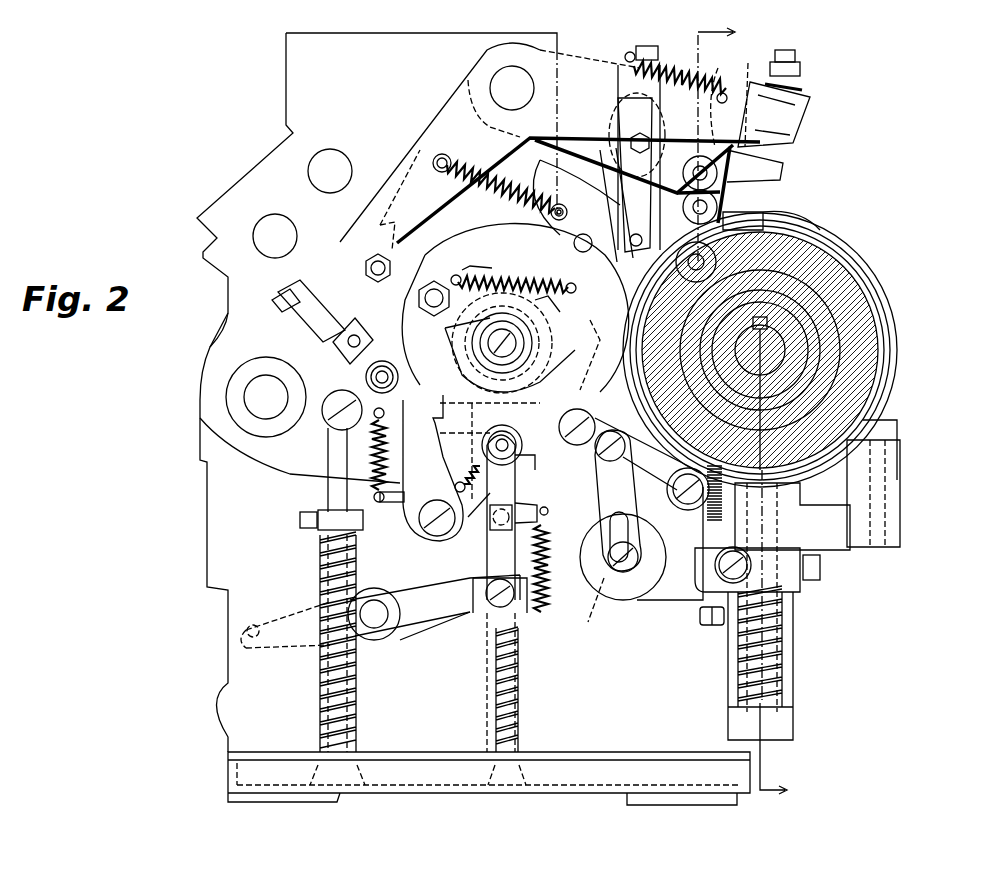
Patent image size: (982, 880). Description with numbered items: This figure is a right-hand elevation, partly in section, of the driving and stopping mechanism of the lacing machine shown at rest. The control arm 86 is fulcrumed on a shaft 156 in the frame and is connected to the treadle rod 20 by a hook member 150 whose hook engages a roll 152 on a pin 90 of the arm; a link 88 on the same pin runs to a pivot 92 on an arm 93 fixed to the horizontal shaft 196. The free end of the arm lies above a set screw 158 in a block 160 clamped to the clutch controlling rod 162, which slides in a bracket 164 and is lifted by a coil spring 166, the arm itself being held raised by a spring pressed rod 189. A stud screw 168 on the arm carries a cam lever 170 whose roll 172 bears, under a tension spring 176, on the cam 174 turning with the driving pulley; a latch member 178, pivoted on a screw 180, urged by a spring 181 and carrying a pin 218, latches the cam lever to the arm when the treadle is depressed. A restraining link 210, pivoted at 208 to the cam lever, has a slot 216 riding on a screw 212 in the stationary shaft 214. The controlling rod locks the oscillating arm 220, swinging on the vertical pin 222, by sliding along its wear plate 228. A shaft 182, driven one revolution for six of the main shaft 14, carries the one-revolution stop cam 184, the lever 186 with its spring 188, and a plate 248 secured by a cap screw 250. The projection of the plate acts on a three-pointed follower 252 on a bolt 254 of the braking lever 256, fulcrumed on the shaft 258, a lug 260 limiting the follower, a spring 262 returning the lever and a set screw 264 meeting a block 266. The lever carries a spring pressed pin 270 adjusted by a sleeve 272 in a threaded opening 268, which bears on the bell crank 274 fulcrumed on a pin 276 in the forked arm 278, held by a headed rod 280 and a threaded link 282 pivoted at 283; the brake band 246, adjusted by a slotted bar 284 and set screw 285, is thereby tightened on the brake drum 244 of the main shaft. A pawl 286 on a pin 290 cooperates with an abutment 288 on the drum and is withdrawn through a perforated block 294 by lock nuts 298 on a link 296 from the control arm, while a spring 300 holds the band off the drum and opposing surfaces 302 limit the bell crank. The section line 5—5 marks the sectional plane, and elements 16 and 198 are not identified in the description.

The housing plate 16 is at (473, 419).
The shaft 258 is at (512, 88).
The braking lever 256 is at (430, 127).
The spring 262 is at (500, 210).
The lug 260 is at (375, 226).
The one-revolution stop cam 184 is at (468, 242).
The lever 186 is at (480, 318).
The plate 248 is at (497, 254).
The spring 188 is at (522, 284).
The shaft 182 is at (470, 347).
The cap screw 250 is at (433, 310).
The bolt 254 is at (362, 268).
The three-pointed follower 252 is at (340, 300).
The block 266 is at (340, 352).
The set screw 264 is at (215, 333).
The pin 218 is at (366, 377).
The shaft 156 is at (255, 407).
The spring 181 is at (328, 450).
The control arm 86 is at (292, 480).
The spring pressed rod 189 is at (298, 522).
The latch member 178 is at (402, 455).
The screw 180 is at (437, 541).
The tension spring 176 is at (490, 460).
The pin 90 is at (487, 446).
The treadle rod 20 is at (528, 668).
The pivot 92 is at (486, 593).
The link 88 is at (480, 540).
The arm 93 is at (470, 625).
The horizontal shaft 196 is at (376, 628).
The arm 198 is at (282, 650).
The roll 152 is at (518, 472).
The hook member 150 is at (530, 506).
The pivot 208 is at (597, 470).
The restraining link 210 is at (552, 522).
The slot 216 is at (606, 548).
The screw 212 is at (641, 590).
The shaft 214 is at (600, 611).
The stud screw 168 is at (598, 422).
The roll 172 is at (625, 452).
The cam lever 170 is at (672, 490).
The set screw 158 is at (700, 620).
The block 160 is at (800, 588).
The clutch controlling rod 162 is at (783, 622).
The coil spring 166 is at (785, 647).
The bracket 164 is at (795, 690).
The wear plate 228 is at (792, 514).
The arm 220 is at (900, 442).
The vertical pin 222 is at (905, 465).
The cam 174 is at (897, 340).
The brake drum 244 is at (832, 222).
The brake band 246 is at (860, 256).
The abutment 288 is at (852, 272).
The main driven shaft 14 is at (830, 292).
The pawl 286 is at (771, 220).
The pin 290 is at (688, 222).
The perforated block 294 is at (685, 219).
The pivot 283 is at (575, 238).
The lock nuts 298 is at (576, 204).
The link 296 is at (592, 322).
The threaded link 282 is at (600, 195).
The headed rod 280 is at (628, 143).
The slotted bar 284 is at (613, 128).
The forked arm 278 is at (556, 168).
The set screw 285 is at (628, 54).
The spring 300 is at (694, 50).
The section line 5 is at (753, 411).
The opposing surfaces 302 is at (716, 72).
The spring pressed pin 270 is at (805, 60).
The sleeve 272 is at (805, 82).
The threaded opening 268 is at (814, 110).
The brake band actuating bell crank 274 is at (785, 170).
The pin 276 is at (765, 182).